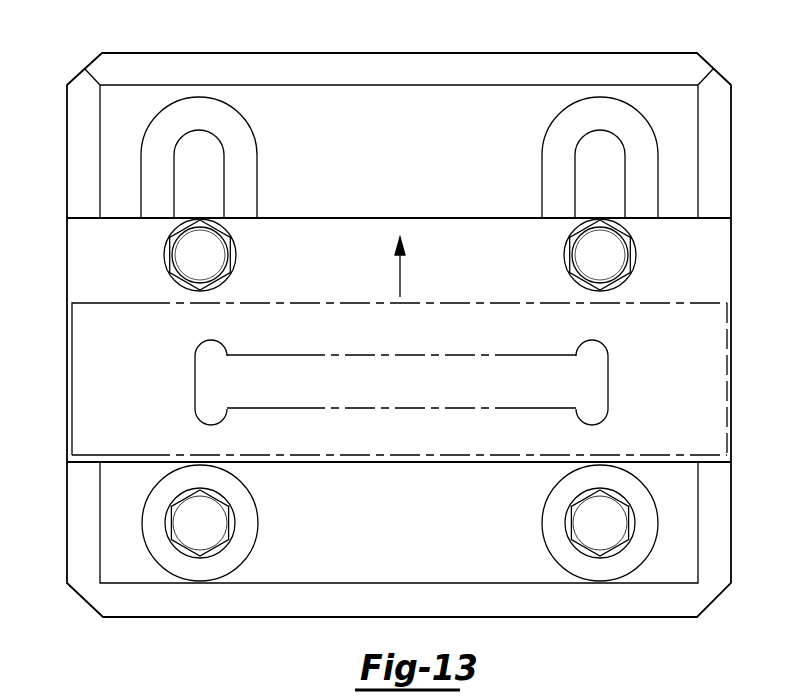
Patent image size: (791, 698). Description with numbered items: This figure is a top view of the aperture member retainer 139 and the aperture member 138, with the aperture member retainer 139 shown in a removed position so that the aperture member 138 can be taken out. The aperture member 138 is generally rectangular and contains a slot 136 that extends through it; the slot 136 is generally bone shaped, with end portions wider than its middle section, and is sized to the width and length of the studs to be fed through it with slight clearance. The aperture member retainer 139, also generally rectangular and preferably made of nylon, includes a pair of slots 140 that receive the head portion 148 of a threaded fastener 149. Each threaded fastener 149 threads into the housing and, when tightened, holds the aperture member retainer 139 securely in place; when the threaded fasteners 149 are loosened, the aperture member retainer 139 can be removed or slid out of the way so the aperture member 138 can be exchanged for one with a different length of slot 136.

The slot 136 is at (243, 388).
The aperture member 138 is at (687, 395).
The aperture member retainer 139 is at (440, 97).
The slots 140 is at (597, 162).
The head portion 148 is at (205, 255).
The threaded fastener 149 is at (152, 246).